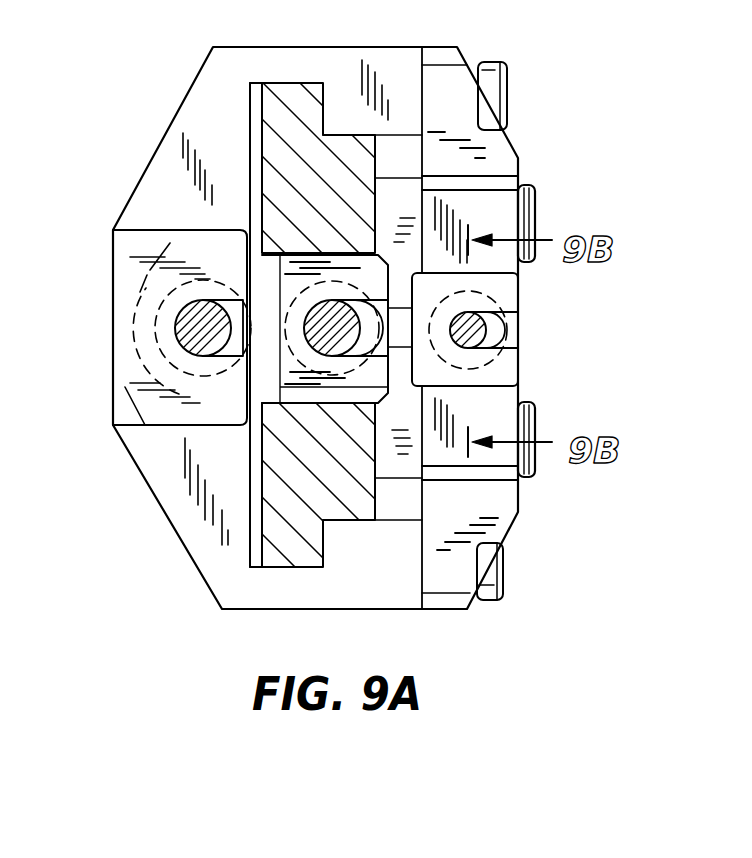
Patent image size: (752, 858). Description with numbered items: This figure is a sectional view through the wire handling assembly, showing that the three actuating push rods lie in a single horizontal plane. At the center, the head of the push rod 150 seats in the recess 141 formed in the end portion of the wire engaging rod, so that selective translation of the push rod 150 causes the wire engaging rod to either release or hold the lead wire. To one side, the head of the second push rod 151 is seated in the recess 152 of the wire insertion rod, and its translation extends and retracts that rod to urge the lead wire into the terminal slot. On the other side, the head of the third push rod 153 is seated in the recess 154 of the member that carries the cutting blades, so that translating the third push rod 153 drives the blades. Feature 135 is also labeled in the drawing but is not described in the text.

The clamp housing body 135 is at (520, 158).
The recess 141 is at (288, 348).
The push rod 150 is at (333, 333).
The second push rod 151 is at (485, 327).
The recess 152 is at (490, 358).
The third push rod 153 is at (188, 318).
The recess 154 is at (155, 345).